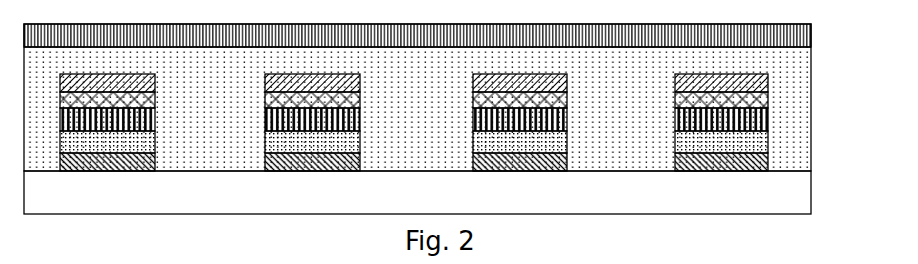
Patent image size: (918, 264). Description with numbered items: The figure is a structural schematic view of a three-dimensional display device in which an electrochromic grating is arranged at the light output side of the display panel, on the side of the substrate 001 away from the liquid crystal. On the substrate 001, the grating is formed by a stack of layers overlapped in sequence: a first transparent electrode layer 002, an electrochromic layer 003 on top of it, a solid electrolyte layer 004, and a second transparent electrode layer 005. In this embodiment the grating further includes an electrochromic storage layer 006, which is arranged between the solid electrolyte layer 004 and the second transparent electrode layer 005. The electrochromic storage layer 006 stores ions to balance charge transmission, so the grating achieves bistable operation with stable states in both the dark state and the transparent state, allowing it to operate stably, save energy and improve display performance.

The substrate 001 is at (789, 204).
The first transparent electrode layer 002 is at (750, 161).
The electrochromic layer 003 is at (750, 140).
The solid electrolyte layer 004 is at (750, 117).
The second transparent electrode layer 005 is at (750, 81).
The electrochromic storage layer 006 is at (750, 97).